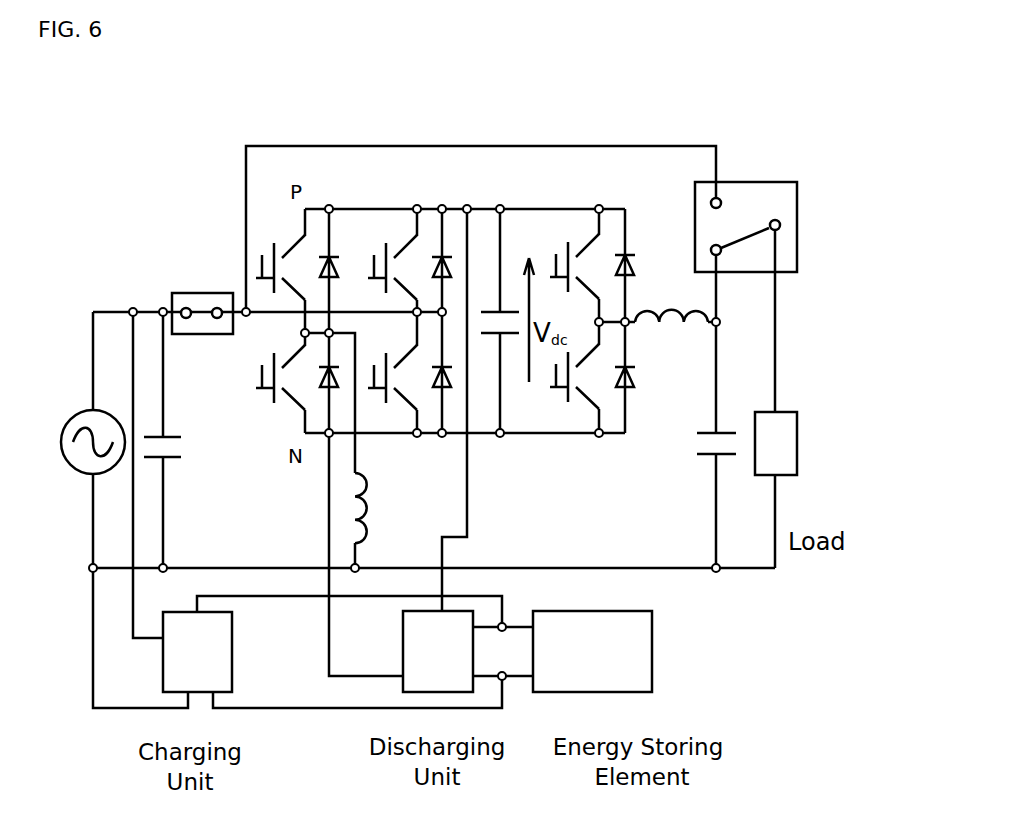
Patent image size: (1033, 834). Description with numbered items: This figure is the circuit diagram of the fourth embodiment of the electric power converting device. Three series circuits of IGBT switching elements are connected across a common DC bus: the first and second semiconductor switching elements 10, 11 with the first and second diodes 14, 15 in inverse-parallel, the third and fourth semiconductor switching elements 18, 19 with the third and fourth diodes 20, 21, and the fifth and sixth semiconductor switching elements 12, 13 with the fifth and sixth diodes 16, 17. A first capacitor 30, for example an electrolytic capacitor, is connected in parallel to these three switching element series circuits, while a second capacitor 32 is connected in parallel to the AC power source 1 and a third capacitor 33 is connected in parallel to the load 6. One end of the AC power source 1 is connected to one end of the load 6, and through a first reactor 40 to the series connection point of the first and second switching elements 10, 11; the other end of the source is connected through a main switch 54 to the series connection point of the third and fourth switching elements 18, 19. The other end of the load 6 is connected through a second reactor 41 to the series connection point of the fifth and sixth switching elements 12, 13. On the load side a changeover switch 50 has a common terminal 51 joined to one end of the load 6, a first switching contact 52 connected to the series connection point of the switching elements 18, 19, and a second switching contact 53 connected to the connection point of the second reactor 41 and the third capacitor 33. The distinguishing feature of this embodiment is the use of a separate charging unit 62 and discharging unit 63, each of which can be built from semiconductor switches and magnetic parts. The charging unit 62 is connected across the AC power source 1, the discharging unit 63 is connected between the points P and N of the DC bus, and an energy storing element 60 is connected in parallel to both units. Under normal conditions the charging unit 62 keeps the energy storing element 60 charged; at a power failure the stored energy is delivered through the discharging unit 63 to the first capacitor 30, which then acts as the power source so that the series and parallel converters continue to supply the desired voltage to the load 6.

The AC power source 1 is at (83, 413).
The load 6 is at (783, 475).
The first semiconductor switching element 10 is at (285, 238).
The second semiconductor switching element 11 is at (283, 403).
The fifth semiconductor switching element 12 is at (580, 238).
The sixth semiconductor switching element 13 is at (580, 405).
The first diode 14 is at (338, 247).
The second diode 15 is at (322, 397).
The fifth diode 16 is at (633, 247).
The sixth diode 17 is at (635, 395).
The third semiconductor switching element 18 is at (400, 240).
The fourth semiconductor switching element 19 is at (395, 405).
The third diode 20 is at (437, 250).
The fourth diode 21 is at (435, 393).
The first capacitor 30 is at (490, 308).
The second capacitor 32 is at (187, 453).
The third capacitor 33 is at (697, 443).
The first reactor 40 is at (372, 500).
The second reactor 41 is at (676, 330).
The changeover switch 50 is at (745, 185).
The common terminal 51 is at (776, 220).
The first switching contact 52 is at (717, 200).
The second switching contact 53 is at (717, 257).
The main switch 54 is at (192, 293).
The energy storing element 60 is at (652, 650).
The charging unit 62 is at (232, 650).
The discharging unit 63 is at (403, 650).